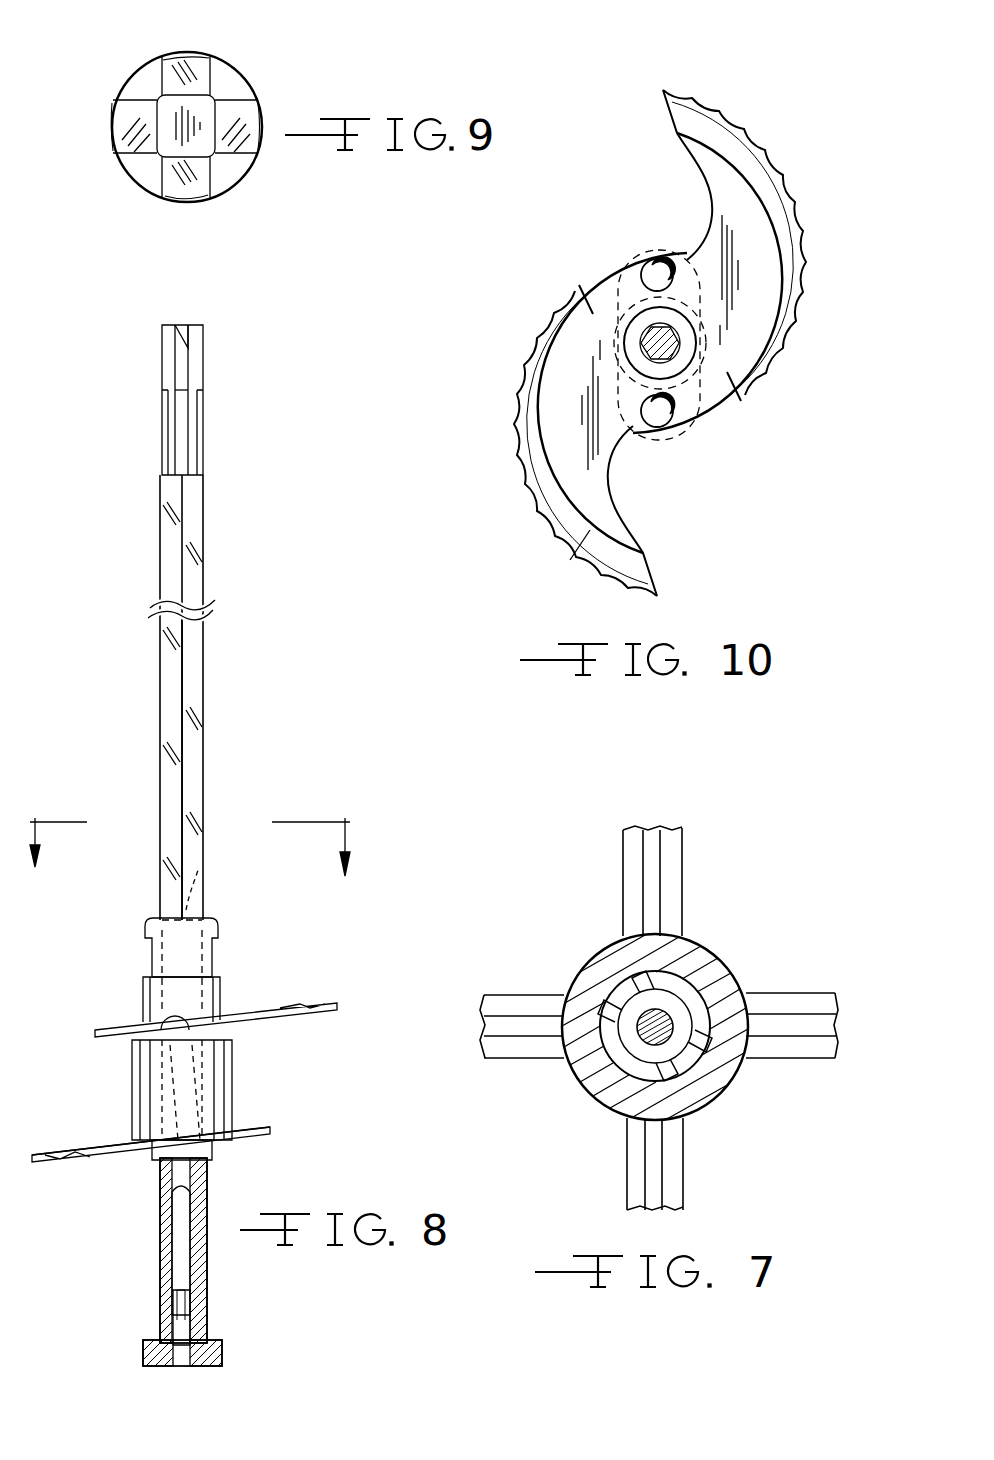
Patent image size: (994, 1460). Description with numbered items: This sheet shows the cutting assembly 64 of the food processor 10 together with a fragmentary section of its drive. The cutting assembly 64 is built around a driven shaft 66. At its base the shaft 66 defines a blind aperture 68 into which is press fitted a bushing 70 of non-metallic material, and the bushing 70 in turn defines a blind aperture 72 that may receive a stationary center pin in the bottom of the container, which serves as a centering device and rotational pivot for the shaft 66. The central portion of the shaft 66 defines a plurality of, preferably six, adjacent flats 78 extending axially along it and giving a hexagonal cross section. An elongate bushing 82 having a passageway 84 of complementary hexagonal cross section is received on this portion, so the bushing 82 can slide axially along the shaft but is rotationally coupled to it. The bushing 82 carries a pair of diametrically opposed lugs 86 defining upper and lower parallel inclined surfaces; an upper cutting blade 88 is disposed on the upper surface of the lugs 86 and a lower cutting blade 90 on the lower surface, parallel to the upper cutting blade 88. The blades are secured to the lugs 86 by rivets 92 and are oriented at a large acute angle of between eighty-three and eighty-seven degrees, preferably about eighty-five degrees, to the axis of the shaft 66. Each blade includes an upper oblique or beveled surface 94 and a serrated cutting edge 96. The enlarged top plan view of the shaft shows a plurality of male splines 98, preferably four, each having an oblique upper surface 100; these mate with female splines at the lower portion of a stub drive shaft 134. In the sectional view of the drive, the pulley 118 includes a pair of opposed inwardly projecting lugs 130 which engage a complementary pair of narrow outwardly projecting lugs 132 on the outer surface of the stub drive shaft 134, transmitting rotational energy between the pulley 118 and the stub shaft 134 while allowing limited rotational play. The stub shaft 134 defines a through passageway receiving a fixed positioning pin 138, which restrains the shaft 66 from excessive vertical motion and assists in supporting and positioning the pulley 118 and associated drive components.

In FIG. 8, the food processor 10 is at (193, 862).
In FIG. 8, the cutting assembly 64 is at (240, 745).
In FIG. 9, the driven shaft 66 is at (125, 180).
In FIG. 8, the driven shaft 66 is at (188, 443).
In FIG. 10, the driven shaft 66 is at (677, 357).
In FIG. 8, the blind aperture 68 is at (205, 1222).
In FIG. 8, the bushing 70 is at (205, 1318).
In FIG. 8, the blind aperture 72 is at (180, 1316).
In FIG. 8, the flats 78 is at (196, 690).
In FIG. 8, the elongate bushing 82 is at (212, 925).
In FIG. 8, the passageway 84 is at (205, 882).
In FIG. 8, the lugs 86 is at (195, 1060).
In FIG. 10, the lugs 86 is at (685, 450).
In FIG. 8, the upper cutting blade 88 is at (250, 1010).
In FIG. 10, the upper cutting blade 88 is at (748, 282).
In FIG. 8, the lower cutting blade 90 is at (120, 1160).
In FIG. 10, the lower cutting blade 90 is at (578, 560).
In FIG. 8, the rivets 92 is at (160, 1005).
In FIG. 10, the rivets 92 is at (655, 432).
In FIG. 8, the beveled surface 94 is at (45, 1152).
In FIG. 10, the beveled surface 94 is at (540, 490).
In FIG. 10, the serrated cutting edge 96 is at (520, 436).
In FIG. 9, the male splines 98 is at (238, 93).
In FIG. 8, the male splines 98 is at (185, 372).
In FIG. 9, the oblique upper surface 100 is at (190, 178).
In FIG. 8, the oblique upper surface 100 is at (182, 322).
In FIG. 7, the pulley 118 is at (582, 985).
In FIG. 7, the inwardly projecting lugs 130 is at (695, 1112).
In FIG. 7, the outwardly projecting lugs 132 is at (580, 1078).
In FIG. 7, the stub drive shaft 134 is at (612, 995).
In FIG. 7, the positioning pin 138 is at (725, 1080).